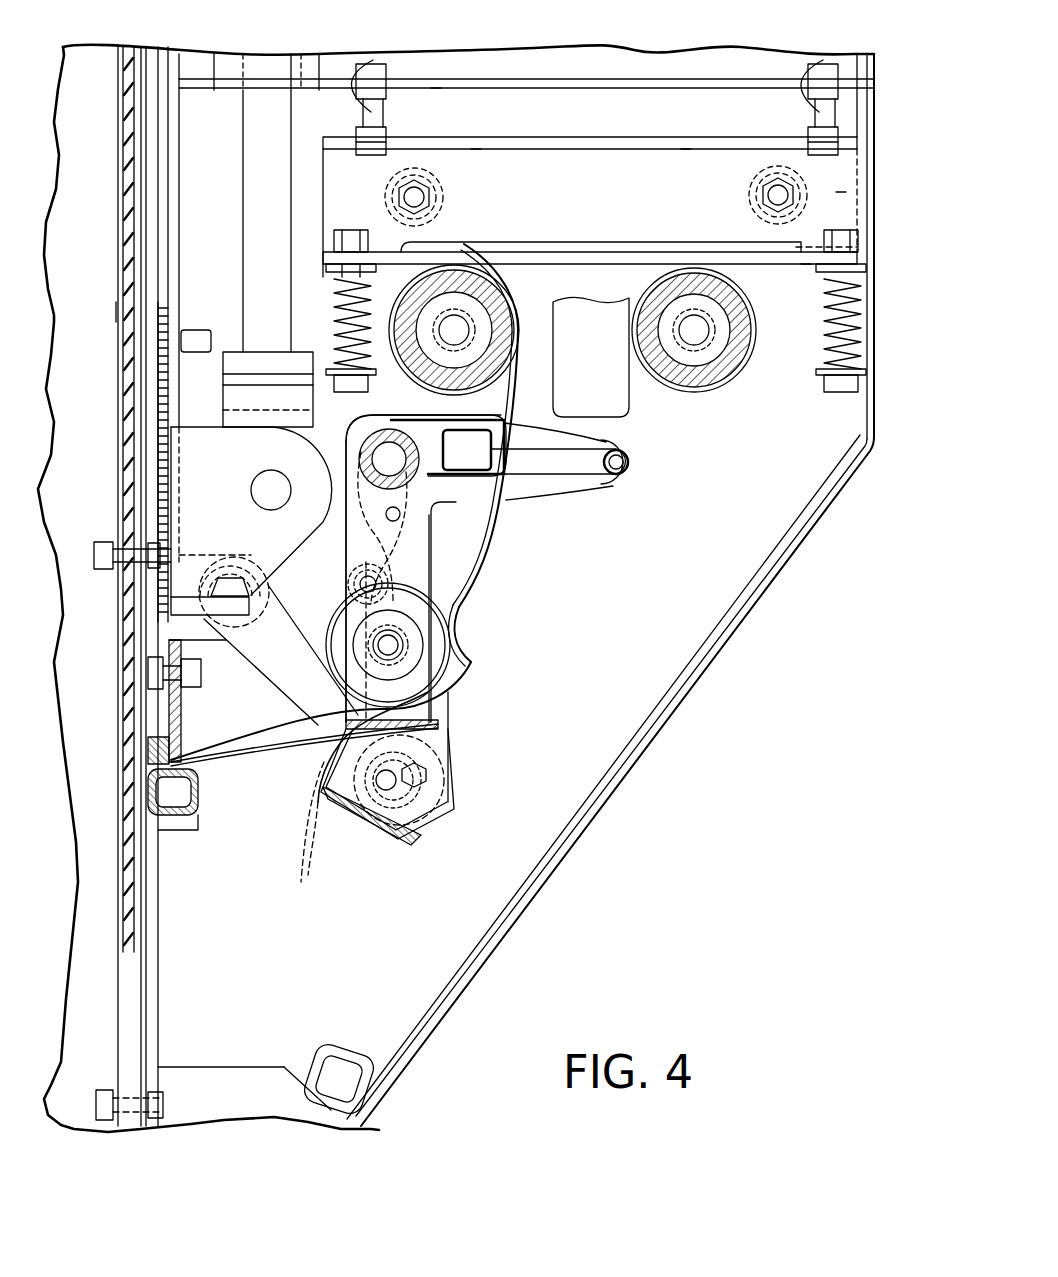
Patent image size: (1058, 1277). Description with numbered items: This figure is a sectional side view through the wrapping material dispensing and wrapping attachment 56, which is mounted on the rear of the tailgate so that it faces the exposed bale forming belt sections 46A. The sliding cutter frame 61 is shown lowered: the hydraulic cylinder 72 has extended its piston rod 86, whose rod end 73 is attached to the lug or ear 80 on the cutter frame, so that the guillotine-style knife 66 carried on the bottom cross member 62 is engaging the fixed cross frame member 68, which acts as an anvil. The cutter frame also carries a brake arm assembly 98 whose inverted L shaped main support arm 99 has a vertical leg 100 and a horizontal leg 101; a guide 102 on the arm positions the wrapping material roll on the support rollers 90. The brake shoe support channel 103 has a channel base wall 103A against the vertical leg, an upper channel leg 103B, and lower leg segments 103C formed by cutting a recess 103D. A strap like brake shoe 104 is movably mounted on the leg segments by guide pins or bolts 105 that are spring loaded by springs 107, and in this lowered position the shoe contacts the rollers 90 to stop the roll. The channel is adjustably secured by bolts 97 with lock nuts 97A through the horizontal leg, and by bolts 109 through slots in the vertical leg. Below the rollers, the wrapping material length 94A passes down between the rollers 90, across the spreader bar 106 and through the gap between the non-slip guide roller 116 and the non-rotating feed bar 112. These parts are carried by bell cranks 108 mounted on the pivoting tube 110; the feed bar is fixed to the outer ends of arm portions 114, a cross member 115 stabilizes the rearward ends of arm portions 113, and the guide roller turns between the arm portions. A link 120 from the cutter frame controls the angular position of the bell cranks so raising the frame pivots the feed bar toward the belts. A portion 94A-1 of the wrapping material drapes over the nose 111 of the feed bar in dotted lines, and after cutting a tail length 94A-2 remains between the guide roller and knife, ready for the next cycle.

The bale forming belt section 46A is at (128, 308).
The wrapping material dispensing and wrapping attachment 56 is at (728, 675).
The sliding cutter frame 61 is at (185, 328).
The bottom cross member 62 is at (150, 688).
The guillotine-style knife 66 is at (182, 706).
The fixed cross frame member 68 is at (200, 798).
The hydraulic cylinder 72 is at (228, 62).
The rod end 73 is at (235, 455).
The lug or ear 80 is at (195, 525).
The piston rod 86 is at (255, 172).
The support roller 90 is at (525, 320).
The wrapping material length 94A is at (470, 682).
The wrapping material length portion 94A-1 is at (305, 862).
The tail length of wrapping material 94A-2 is at (195, 760).
The bolt 97 is at (360, 68).
The lock nut 97A is at (385, 95).
The brake arm assembly 98 is at (842, 185).
The main support arm 99 is at (845, 110).
The vertical leg 100 is at (190, 212).
The horizontal leg 101 is at (435, 90).
The guide 102 is at (612, 342).
The brake shoe support channel 103 is at (640, 172).
The channel base wall 103A is at (683, 162).
The upper channel leg 103B is at (475, 148).
The lower leg segment 103C is at (305, 275).
The recess 103D is at (555, 243).
The brake shoe 104 is at (440, 255).
The guide pin or bolt 105 is at (325, 322).
The wrapping material spreader bar 106 is at (495, 462).
The spring 107 is at (390, 378).
The bell crank 108 is at (555, 490).
The bolt 109 is at (428, 188).
The pivoting tube 110 is at (358, 548).
The nose portion 111 is at (340, 832).
The wrapping material feed bar 112 is at (350, 835).
The arm portion 113 is at (632, 440).
The arm portion 114 is at (415, 565).
The cross member 115 is at (630, 462).
The wrapping material guide roller 116 is at (425, 612).
The link 120 is at (312, 737).